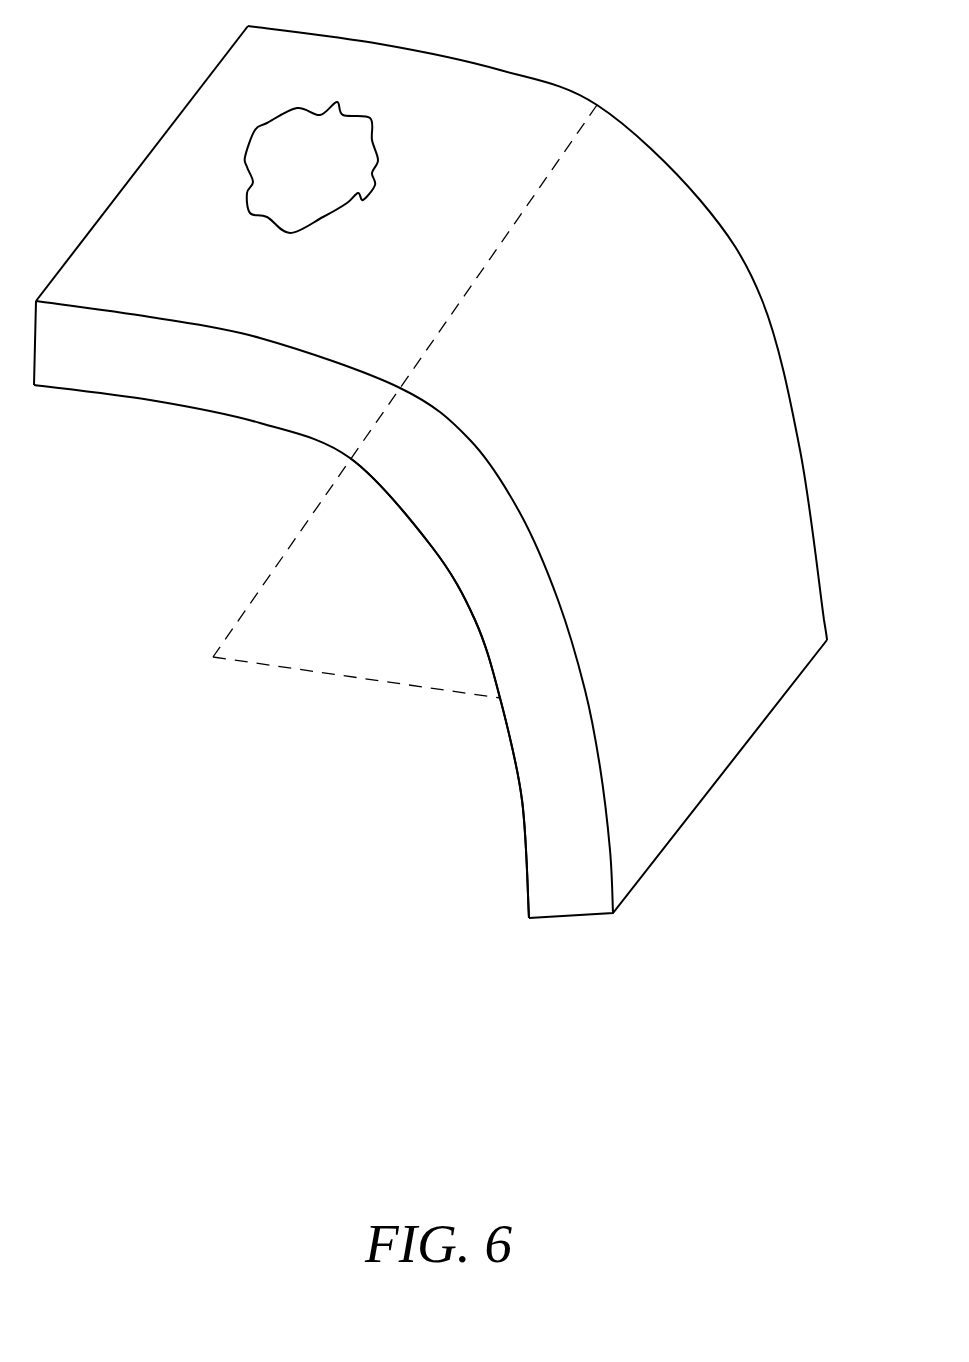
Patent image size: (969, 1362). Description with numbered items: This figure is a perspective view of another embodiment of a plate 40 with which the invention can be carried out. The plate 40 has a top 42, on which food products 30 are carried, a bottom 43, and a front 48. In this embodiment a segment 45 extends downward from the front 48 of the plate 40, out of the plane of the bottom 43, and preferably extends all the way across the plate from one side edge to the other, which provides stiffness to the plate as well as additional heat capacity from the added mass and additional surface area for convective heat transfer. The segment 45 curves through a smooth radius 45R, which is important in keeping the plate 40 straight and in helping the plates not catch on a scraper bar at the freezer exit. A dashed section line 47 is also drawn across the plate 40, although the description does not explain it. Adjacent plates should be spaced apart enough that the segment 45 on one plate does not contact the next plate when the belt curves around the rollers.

The plate 40 is at (750, 233).
The top 42 is at (324, 576).
The bottom 43 is at (200, 412).
The segment 45 is at (433, 555).
The smooth radius 45R is at (356, 670).
The cross-section plane 47 is at (605, 96).
The front 48 is at (140, 162).
The food products 30 is at (311, 167).